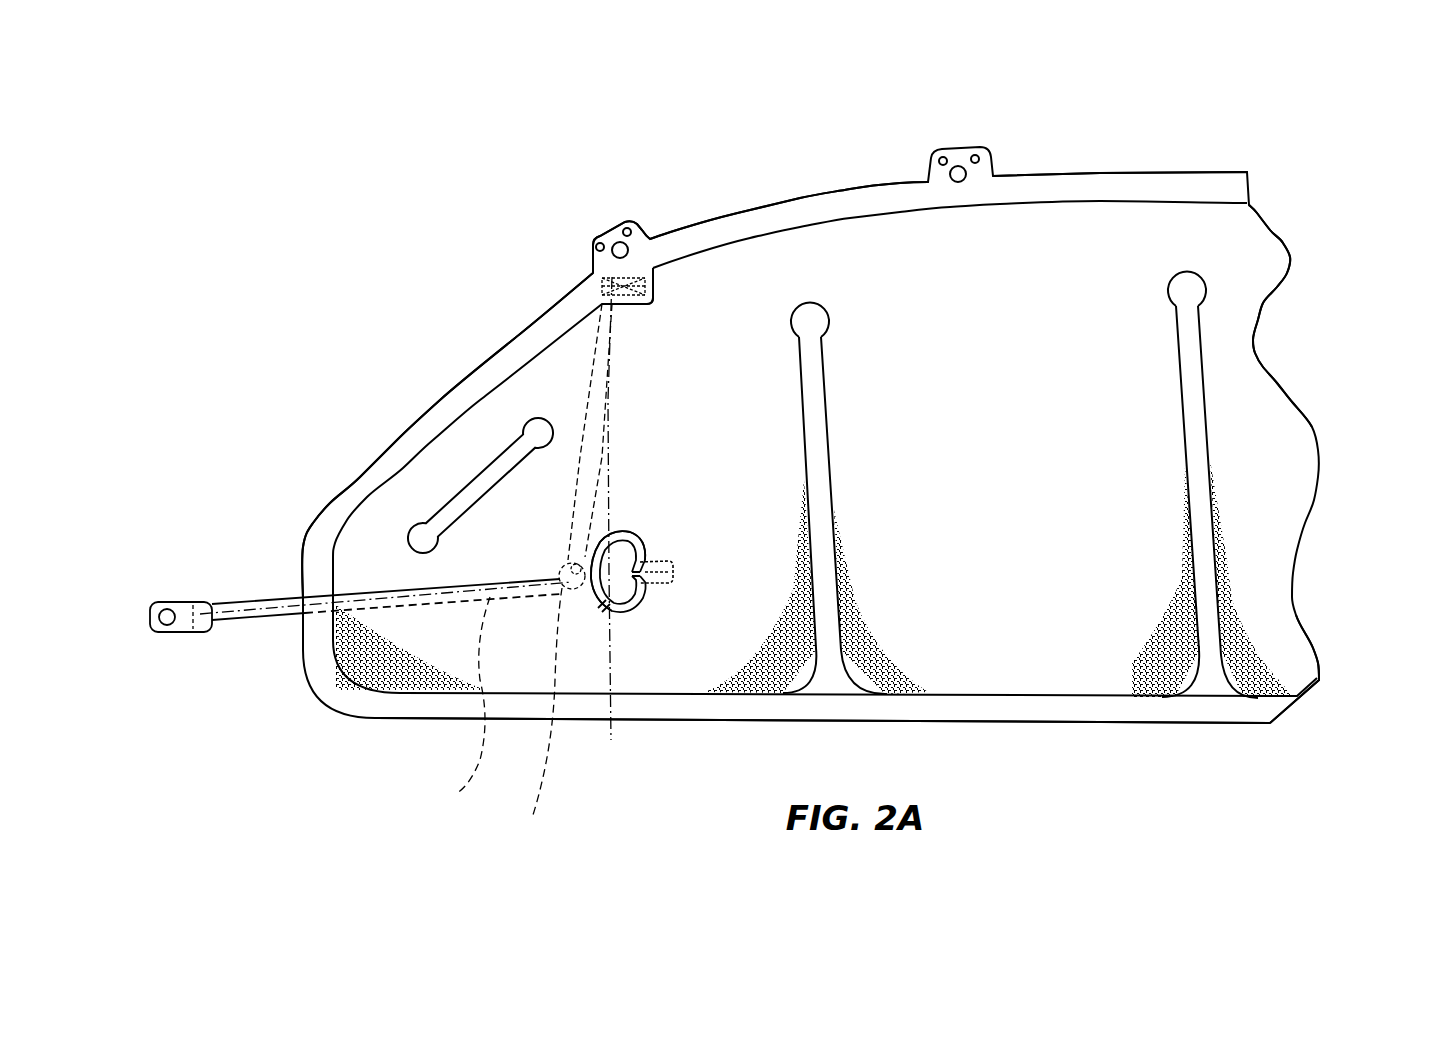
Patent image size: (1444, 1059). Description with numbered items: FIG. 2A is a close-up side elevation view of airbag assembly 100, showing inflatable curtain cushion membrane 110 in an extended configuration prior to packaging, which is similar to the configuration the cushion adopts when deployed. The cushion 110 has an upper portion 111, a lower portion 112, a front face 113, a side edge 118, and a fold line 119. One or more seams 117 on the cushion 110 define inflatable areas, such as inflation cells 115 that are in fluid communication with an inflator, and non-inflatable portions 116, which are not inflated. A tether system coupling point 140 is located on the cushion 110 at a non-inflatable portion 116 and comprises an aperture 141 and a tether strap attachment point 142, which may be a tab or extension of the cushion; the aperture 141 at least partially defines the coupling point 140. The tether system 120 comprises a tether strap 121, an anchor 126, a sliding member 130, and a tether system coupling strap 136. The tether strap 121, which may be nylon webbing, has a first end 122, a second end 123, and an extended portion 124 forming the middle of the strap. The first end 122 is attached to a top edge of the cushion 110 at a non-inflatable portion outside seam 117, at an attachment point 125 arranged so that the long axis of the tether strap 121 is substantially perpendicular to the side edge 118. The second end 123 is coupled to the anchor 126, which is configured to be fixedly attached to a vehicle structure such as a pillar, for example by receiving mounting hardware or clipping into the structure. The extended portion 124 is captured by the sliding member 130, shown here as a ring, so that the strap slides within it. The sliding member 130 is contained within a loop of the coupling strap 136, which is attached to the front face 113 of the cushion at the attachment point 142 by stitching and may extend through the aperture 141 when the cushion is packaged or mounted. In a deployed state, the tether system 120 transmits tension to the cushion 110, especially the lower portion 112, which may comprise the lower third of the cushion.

The airbag assembly 100 is at (1308, 118).
The inflatable curtain cushion membrane 110 is at (1146, 232).
The upper portion 111 is at (1258, 248).
The lower portion 112 is at (1272, 660).
The front face 113 is at (1007, 479).
The inflation cells 115 is at (757, 645).
The non-inflatable portions 116 is at (1190, 335).
The seam 117 is at (813, 220).
The side edge 118 is at (323, 520).
The fold line 119 is at (608, 430).
The tether system 120 is at (548, 493).
The tether strap 121 is at (395, 630).
The first end 122 is at (597, 350).
The second end 123 is at (270, 597).
The extended portion 124 is at (454, 705).
The attachment point 125 is at (616, 277).
The anchor 126 is at (167, 637).
The sliding member 130 is at (528, 715).
The tether system coupling strap 136 is at (631, 616).
The tether system coupling point 140 is at (604, 611).
The aperture 141 is at (620, 532).
The tether strap attachment point 142 is at (663, 557).